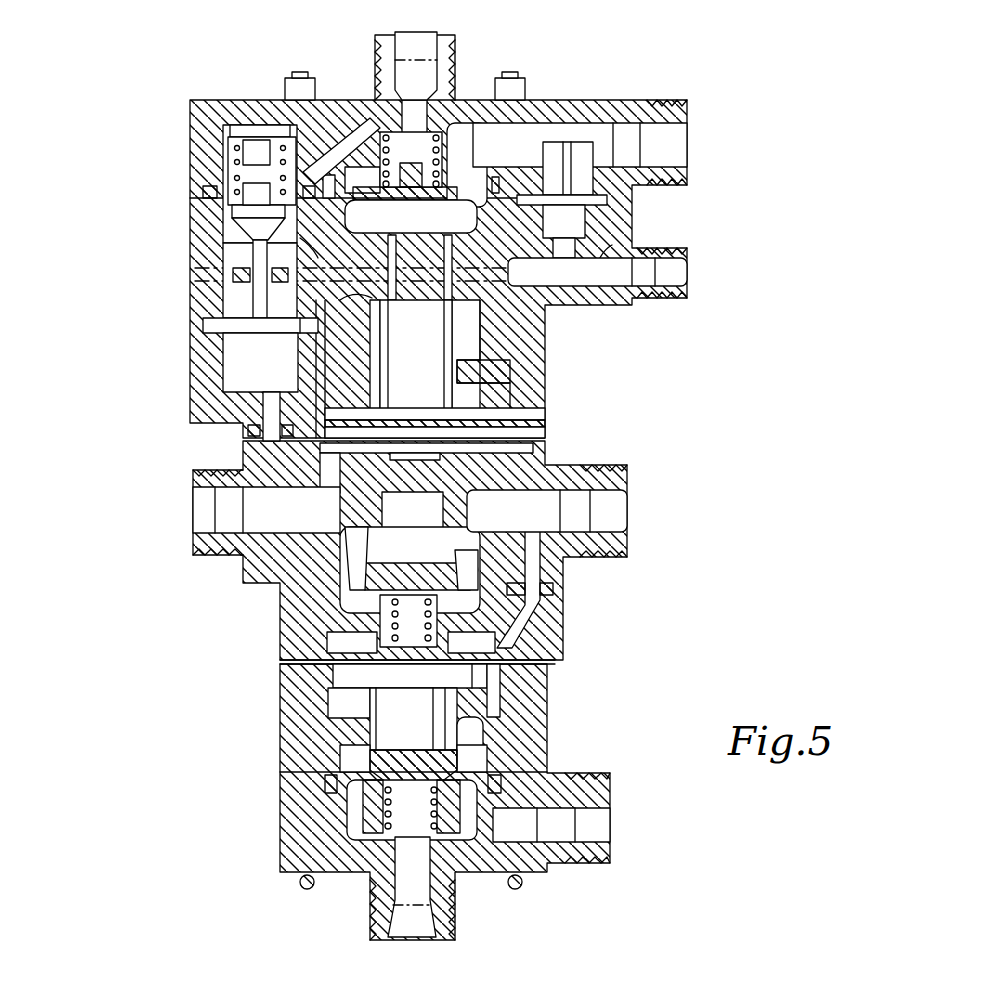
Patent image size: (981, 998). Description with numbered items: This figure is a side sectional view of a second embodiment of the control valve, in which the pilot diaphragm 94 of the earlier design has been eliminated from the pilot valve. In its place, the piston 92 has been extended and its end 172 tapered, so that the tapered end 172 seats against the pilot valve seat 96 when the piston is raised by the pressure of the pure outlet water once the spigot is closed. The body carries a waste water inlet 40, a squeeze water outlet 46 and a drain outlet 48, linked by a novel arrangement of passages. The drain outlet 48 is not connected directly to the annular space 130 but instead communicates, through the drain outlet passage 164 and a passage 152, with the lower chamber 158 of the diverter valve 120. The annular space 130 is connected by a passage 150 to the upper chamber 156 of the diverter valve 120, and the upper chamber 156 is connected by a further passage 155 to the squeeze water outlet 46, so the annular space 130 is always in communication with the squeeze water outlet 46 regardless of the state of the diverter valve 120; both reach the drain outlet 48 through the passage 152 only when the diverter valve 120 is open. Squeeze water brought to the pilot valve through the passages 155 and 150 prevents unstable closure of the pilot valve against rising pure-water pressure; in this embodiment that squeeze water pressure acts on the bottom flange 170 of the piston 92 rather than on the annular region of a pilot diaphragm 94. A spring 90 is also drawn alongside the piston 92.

The waste water inlet 40 is at (680, 100).
The squeeze water outlet 46 is at (456, 50).
The drain outlet 48 is at (600, 268).
The valve spring 90 is at (466, 140).
The piston 92 is at (418, 355).
The pilot diaphragm 94 is at (635, 300).
The pilot valve seat 96 is at (462, 305).
The diverter valve 120 is at (236, 217).
The annular space 130 is at (362, 288).
The passage 150 is at (310, 248).
The passage 152 is at (497, 262).
The passage 155 is at (345, 125).
The upper chamber 156 is at (237, 155).
The lower chamber 158 is at (238, 306).
The drain outlet passage 164 is at (598, 270).
The bottom flange 170 is at (510, 412).
The tapered end 172 is at (372, 312).